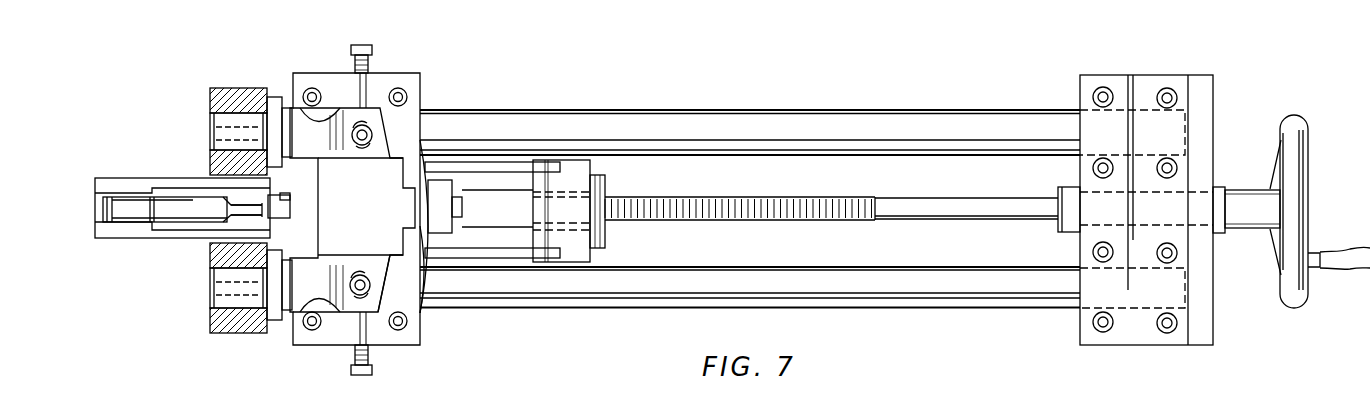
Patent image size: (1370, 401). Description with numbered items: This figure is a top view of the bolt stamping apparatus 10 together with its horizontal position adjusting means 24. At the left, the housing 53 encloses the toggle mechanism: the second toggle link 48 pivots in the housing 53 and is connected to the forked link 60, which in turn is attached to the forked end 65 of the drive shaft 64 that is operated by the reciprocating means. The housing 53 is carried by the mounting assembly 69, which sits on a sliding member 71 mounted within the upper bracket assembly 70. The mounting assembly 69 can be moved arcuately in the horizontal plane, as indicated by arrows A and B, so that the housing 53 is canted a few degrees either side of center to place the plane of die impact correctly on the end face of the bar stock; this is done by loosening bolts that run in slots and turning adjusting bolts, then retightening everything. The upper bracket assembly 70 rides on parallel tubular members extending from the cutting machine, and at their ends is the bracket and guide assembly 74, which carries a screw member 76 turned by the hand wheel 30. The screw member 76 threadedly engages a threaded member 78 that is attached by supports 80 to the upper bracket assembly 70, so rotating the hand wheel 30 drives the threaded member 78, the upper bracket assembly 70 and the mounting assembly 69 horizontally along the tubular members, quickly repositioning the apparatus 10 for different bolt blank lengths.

The bolt stamping apparatus 10 is at (423, 72).
The horizontal position adjusting means 24 is at (1002, 106).
The hand wheel 30 is at (1305, 177).
The second toggle link 48 is at (102, 206).
The housing 53 is at (150, 177).
The forked link 60 is at (225, 217).
The drive shaft 64 is at (284, 198).
The forked end 65 is at (265, 218).
The mounting assembly 69 is at (398, 168).
The upper bracket assembly 70 is at (412, 272).
The sliding member 71 is at (382, 275).
The bracket and guide assembly 74 is at (1163, 75).
The screw member 76 is at (933, 200).
The threaded member 78 is at (598, 185).
The supports 80 is at (500, 253).
The arrow A is at (98, 245).
The arrow B is at (97, 173).